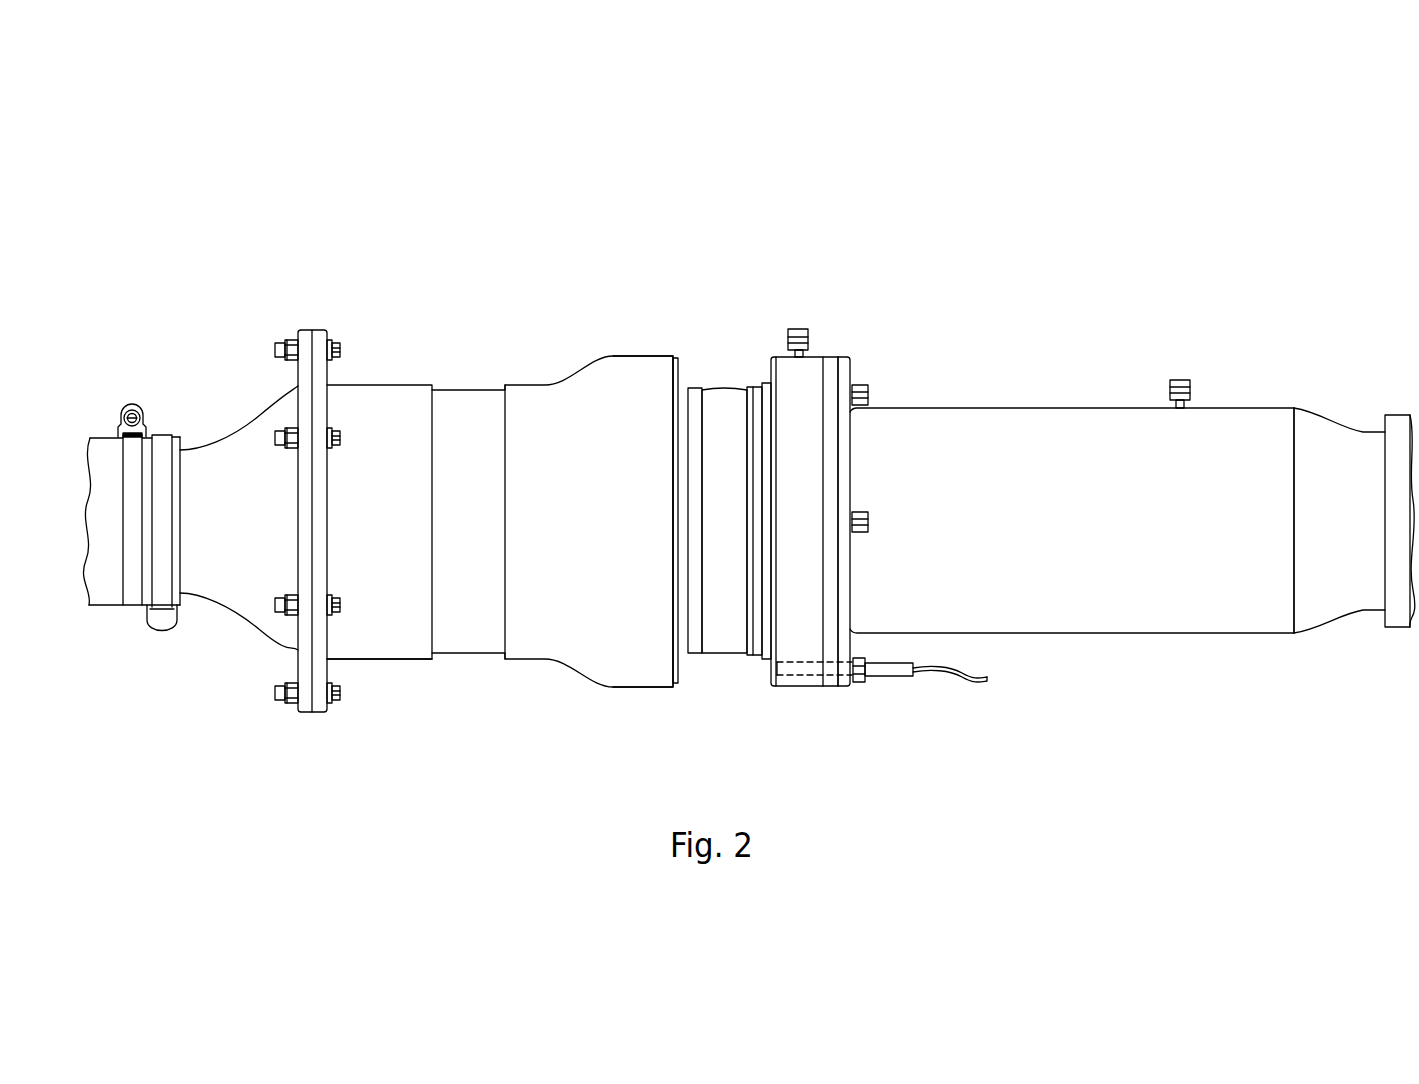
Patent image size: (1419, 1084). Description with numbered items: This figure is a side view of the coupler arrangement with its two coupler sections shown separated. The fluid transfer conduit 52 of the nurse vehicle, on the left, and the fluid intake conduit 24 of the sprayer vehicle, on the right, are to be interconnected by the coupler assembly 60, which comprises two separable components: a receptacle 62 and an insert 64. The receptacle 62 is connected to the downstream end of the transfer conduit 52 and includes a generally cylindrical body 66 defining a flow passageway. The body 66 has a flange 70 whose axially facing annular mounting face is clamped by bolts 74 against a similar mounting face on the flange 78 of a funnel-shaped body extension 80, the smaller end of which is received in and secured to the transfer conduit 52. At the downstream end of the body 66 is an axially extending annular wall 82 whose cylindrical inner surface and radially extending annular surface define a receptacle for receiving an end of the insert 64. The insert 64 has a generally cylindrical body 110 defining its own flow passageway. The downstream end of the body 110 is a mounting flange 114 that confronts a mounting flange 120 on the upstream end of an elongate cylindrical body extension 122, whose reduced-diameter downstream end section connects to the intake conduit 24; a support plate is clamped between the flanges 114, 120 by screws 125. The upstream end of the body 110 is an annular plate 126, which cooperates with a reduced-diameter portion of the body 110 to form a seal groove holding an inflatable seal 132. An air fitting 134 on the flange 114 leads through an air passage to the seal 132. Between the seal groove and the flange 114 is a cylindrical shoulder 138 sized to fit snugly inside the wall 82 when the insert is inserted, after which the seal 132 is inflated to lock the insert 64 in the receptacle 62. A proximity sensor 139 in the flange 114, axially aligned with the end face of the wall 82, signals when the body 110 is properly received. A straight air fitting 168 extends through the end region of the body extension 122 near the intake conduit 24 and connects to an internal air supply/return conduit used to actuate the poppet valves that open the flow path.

The fluid intake conduit 24 is at (1394, 629).
The fluid transfer conduit 52 is at (100, 608).
The coupler assembly 60 is at (806, 474).
The receptacle 62 is at (452, 345).
The insert 64 is at (1132, 498).
The cylindrical body 66 is at (379, 660).
The flange 70 is at (325, 340).
The bolts 74 is at (335, 347).
The flange 78 is at (302, 330).
The funnel-shaped body extension 80 is at (242, 622).
The annular wall 82 is at (643, 353).
The cylindrical body 110 is at (752, 385).
The mounting flange 114 is at (812, 357).
The mounting flange 120 is at (848, 356).
The cylindrical body extension 122 is at (1240, 630).
The screws 125 is at (868, 384).
The annular plate 126 is at (693, 388).
The inflatable seal 132 is at (723, 390).
The air fitting 134 is at (810, 331).
The cylindrical shoulder 138 is at (765, 383).
The proximity sensor 139 is at (880, 680).
The straight air fitting 168 is at (1191, 388).